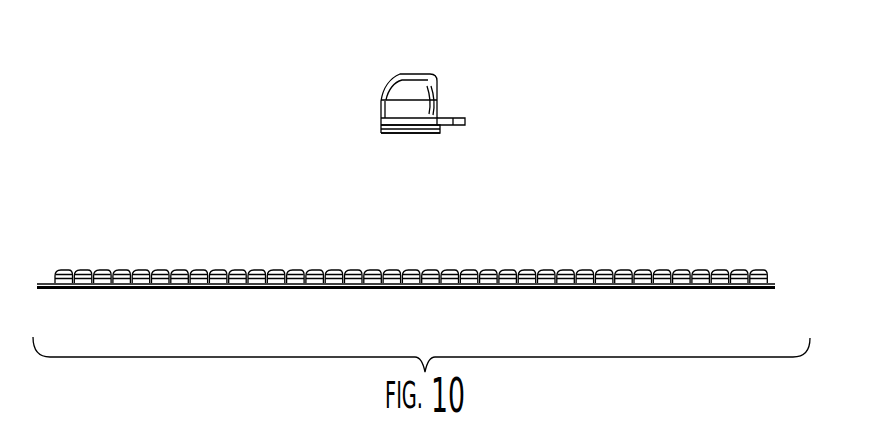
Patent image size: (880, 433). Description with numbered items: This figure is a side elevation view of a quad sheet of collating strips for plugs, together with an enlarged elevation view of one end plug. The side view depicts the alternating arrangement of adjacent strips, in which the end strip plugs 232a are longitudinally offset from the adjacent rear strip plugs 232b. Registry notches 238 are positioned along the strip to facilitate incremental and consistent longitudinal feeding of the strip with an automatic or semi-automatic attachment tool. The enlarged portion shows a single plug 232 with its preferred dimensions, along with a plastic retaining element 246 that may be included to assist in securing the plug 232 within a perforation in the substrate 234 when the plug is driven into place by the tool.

The plug 232 is at (412, 73).
The end strip plug 232a is at (107, 270).
The rear strip plug 232b is at (129, 270).
The substrate 234 is at (444, 117).
The registry notch 238 is at (92, 289).
The plastic retaining element 246 is at (450, 139).